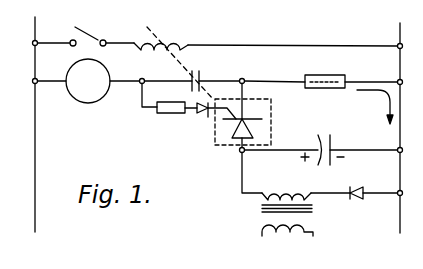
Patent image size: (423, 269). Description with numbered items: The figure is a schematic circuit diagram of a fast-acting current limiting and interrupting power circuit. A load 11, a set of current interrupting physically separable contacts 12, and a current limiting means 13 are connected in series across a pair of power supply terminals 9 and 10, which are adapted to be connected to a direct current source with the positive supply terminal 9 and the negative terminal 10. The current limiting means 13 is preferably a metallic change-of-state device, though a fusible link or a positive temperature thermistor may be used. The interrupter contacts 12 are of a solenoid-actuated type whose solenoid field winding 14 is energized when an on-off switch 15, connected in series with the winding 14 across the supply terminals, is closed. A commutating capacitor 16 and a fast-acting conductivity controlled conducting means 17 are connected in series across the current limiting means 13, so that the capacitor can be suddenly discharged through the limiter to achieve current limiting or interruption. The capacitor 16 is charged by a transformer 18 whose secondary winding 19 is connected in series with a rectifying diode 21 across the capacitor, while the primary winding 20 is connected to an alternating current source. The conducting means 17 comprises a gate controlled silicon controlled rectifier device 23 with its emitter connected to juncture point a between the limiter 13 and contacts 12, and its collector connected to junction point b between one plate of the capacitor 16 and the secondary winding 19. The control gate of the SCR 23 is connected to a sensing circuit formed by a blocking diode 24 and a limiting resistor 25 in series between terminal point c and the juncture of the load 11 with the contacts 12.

The positive supply terminal 9 is at (21, 30).
The negative supply terminal 10 is at (415, 33).
The load 11 is at (78, 88).
The current interrupting physically separable contacts 12 is at (205, 76).
The current limiting means 13 is at (329, 77).
The solenoid field winding 14 is at (179, 42).
The on-off switch 15 is at (92, 33).
The commutating capacitor 16 is at (333, 148).
The conductivity controlled conducting means 17 is at (249, 124).
The transformer 18 is at (281, 201).
The secondary winding 19 is at (290, 181).
The primary winding 20 is at (262, 228).
The rectifying diode 21 is at (356, 189).
The gate controlled silicon controlled rectifier device 23 is at (236, 127).
The blocking diode 24 is at (198, 111).
The limiting resistor 25 is at (150, 113).
The juncture point a is at (257, 92).
The junction point b is at (228, 166).
The terminal point c is at (208, 117).